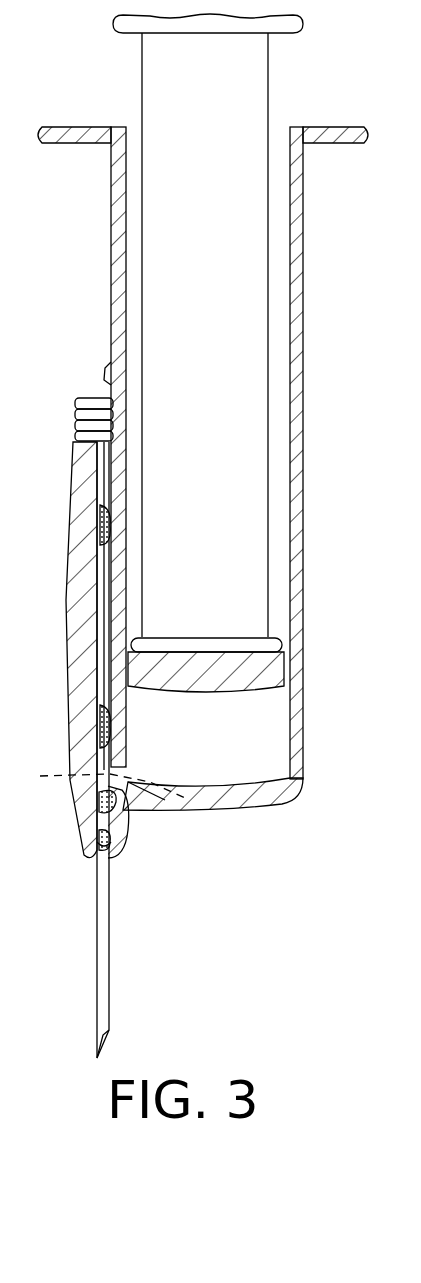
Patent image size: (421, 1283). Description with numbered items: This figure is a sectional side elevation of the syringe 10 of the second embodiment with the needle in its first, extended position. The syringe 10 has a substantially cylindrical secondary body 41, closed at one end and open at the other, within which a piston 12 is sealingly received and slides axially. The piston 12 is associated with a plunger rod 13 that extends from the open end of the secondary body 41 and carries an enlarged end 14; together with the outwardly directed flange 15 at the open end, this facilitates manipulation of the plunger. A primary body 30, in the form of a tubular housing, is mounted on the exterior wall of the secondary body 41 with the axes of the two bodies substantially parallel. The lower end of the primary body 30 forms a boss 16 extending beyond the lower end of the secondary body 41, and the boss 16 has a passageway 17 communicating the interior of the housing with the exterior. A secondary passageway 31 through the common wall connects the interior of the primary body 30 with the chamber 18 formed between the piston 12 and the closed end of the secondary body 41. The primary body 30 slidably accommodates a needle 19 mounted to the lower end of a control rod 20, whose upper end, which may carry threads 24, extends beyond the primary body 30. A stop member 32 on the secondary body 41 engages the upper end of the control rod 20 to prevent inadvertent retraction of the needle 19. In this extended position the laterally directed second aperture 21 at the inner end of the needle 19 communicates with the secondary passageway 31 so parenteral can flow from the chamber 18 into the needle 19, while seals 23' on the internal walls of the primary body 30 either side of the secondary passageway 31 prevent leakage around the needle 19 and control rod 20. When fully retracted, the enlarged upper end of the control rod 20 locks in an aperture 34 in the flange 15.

The syringe 10 is at (383, 54).
The piston 12 is at (286, 680).
The plunger rod 13 is at (240, 262).
The plunger thumb cap 14 is at (296, 33).
The flange 15 is at (326, 127).
The boss 16 is at (128, 835).
The passageway 17 is at (100, 790).
The chamber 18 is at (246, 752).
The needle 19 is at (110, 955).
The control rod 20 is at (100, 458).
The second aperture 21 is at (95, 779).
The seals 23' is at (64, 677).
The threads 24 is at (76, 412).
The primary body 30 is at (82, 597).
The secondary passageway 31 is at (150, 790).
The stop member 32 is at (104, 372).
The aperture 34 is at (90, 127).
The secondary body 41 is at (300, 352).